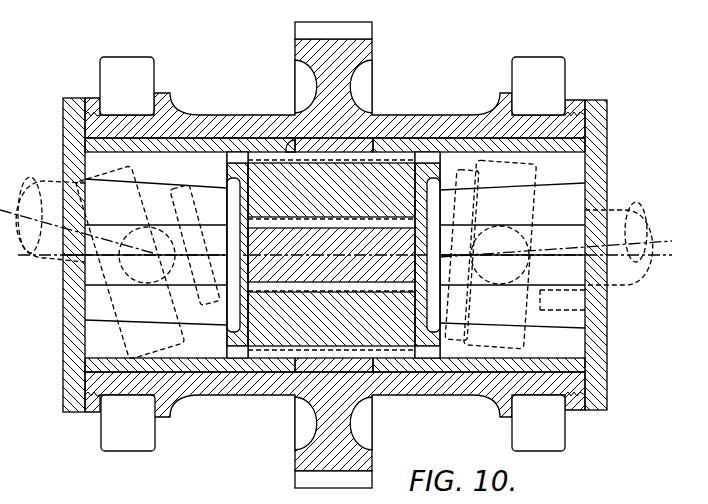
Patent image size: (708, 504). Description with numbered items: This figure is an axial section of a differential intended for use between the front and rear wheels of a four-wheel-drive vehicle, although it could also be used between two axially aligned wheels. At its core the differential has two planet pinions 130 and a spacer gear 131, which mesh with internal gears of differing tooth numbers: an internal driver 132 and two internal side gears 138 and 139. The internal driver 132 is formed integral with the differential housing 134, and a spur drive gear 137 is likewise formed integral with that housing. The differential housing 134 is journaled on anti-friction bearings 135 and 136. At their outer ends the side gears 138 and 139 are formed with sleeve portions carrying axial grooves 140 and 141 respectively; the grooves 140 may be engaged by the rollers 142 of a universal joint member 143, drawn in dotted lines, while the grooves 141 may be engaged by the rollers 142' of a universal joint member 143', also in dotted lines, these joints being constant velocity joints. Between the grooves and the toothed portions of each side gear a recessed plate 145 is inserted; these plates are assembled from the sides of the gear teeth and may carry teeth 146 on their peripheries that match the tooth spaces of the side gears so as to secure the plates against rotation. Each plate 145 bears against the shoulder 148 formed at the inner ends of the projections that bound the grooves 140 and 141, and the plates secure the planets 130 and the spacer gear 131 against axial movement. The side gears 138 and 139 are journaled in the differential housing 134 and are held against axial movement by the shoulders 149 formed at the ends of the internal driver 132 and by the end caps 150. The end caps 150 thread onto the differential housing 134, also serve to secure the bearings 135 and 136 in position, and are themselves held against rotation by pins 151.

The planet pinions 130 is at (404, 163).
The spacer gear 131 is at (405, 266).
The internal driver 132 is at (364, 147).
The differential housing 134 is at (244, 114).
The anti-friction bearing 135 is at (135, 70).
The anti-friction bearing 136 is at (545, 67).
The spur drive gear 137 is at (361, 52).
The internal side gear 138 is at (217, 147).
The internal side gear 139 is at (460, 150).
The axial grooves 140 is at (156, 241).
The axial grooves 141 is at (512, 244).
The rollers 142 is at (106, 263).
The rollers 142' is at (524, 254).
The universal joint member 143 is at (76, 234).
The universal joint member 143' is at (556, 257).
The recessed plate 145 is at (233, 331).
The teeth 146 is at (238, 352).
The shoulder 148 is at (230, 188).
The shoulders 149 is at (289, 143).
The end caps 150 is at (73, 391).
The pins 151 is at (63, 148).